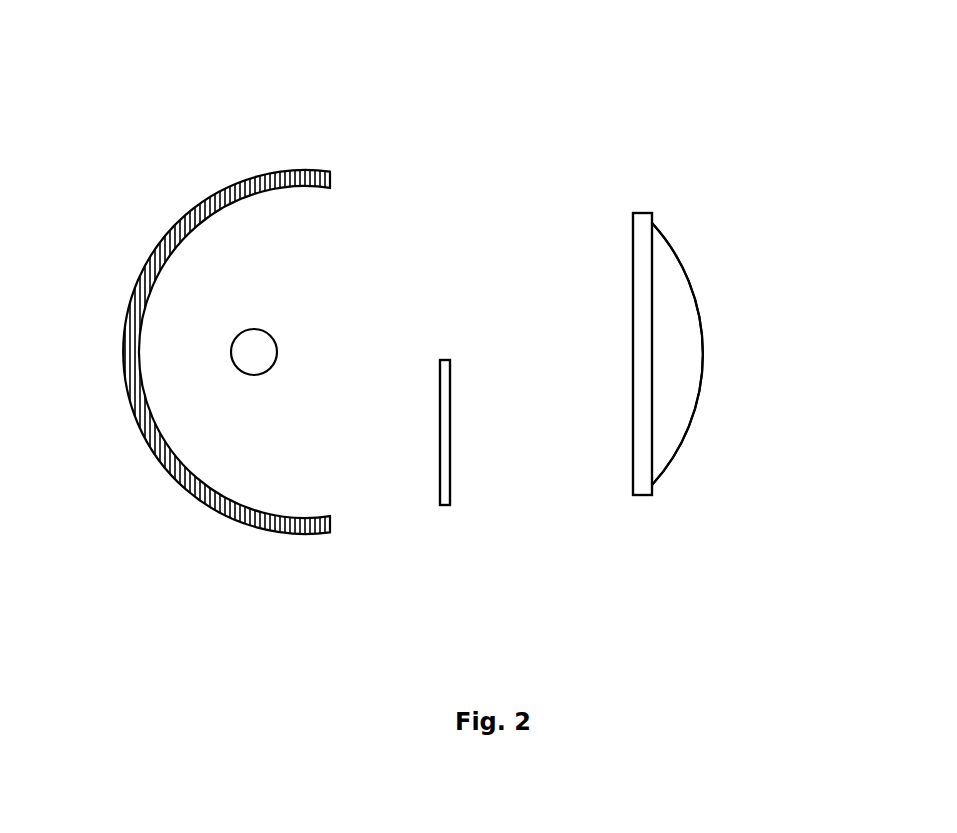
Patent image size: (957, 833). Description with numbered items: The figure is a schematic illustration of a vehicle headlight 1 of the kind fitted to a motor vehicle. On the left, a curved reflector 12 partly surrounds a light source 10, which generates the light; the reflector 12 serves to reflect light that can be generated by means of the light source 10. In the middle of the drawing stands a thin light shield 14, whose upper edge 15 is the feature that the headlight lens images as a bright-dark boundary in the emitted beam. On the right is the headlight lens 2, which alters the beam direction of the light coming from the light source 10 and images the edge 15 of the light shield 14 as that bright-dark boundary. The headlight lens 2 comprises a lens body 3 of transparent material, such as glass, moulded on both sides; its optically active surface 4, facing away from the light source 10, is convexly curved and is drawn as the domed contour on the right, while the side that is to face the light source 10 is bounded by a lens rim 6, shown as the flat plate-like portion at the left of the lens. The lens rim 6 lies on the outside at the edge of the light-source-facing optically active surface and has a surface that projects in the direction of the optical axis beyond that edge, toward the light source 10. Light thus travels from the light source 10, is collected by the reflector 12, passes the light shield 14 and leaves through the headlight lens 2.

The vehicle headlight 1 is at (603, 109).
The headlight lens 2 is at (652, 213).
The lens body 3 is at (668, 308).
The optically active surface 4 is at (698, 398).
The lens rim 6 is at (642, 477).
The light source 10 is at (254, 355).
The reflector 12 is at (237, 197).
The light shield 14 is at (444, 473).
The edge 15 is at (445, 360).